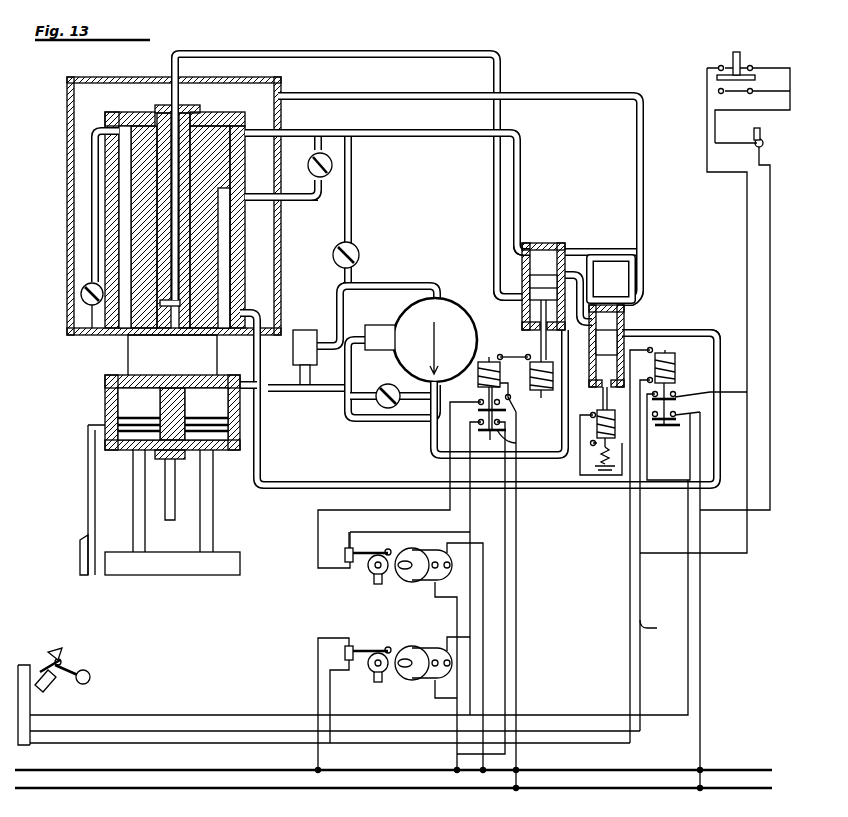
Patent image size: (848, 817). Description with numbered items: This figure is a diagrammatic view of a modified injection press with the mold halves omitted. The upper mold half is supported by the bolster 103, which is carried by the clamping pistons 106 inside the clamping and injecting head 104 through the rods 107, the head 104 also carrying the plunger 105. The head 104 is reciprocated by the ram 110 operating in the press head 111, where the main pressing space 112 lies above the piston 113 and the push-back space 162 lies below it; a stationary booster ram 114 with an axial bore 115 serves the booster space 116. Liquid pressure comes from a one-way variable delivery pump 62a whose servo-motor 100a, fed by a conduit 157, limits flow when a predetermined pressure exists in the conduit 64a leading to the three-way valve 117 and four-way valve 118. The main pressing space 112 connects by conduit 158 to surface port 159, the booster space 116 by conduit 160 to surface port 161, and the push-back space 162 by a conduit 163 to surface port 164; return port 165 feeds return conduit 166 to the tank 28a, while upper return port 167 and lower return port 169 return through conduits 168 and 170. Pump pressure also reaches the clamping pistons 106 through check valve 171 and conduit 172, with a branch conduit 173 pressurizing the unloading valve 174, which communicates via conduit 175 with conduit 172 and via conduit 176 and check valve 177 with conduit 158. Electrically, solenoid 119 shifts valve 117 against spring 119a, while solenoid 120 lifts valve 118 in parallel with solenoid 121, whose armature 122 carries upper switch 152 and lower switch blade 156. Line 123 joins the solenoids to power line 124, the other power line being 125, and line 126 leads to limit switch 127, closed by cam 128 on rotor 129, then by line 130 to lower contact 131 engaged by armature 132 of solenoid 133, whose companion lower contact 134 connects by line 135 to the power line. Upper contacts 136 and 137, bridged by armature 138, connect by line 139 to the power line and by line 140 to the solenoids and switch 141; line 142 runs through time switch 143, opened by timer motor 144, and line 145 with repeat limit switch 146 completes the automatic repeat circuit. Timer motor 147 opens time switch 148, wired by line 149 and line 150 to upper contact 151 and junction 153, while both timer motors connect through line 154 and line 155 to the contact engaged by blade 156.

The tank 28a is at (330, 287).
The one-way variable delivery pump 62a is at (470, 294).
The conduit 64a is at (430, 443).
The servo-motor 100a is at (383, 321).
The bolster 103 is at (183, 568).
The clamping and injecting head 104 is at (105, 386).
The plunger 105 is at (172, 505).
The clamping pistons 106 is at (136, 420).
The rods 107 is at (132, 488).
The ram 110 is at (134, 352).
The press head 111 is at (67, 333).
The main pressing space 112 is at (222, 133).
The piston 113 is at (123, 130).
The booster ram 114 is at (192, 112).
The axial bore 115 is at (158, 138).
The booster space 116 is at (178, 306).
The three-way valve 117 is at (608, 305).
The four-way valve 118 is at (540, 246).
The solenoid 119 is at (597, 410).
The spring 119a is at (617, 460).
The solenoid 120 is at (543, 392).
The solenoid 121 is at (490, 357).
The armature 122 is at (487, 440).
The line 123 is at (516, 685).
The power line 124 is at (406, 791).
The power line 125 is at (738, 769).
The line 126 is at (505, 512).
The limit switch 127 is at (48, 660).
The cam 128 is at (80, 550).
The rotor 129 is at (88, 469).
The line 130 is at (168, 714).
The lower contact 131 is at (712, 408).
The armature 132 is at (665, 438).
The solenoid 133 is at (676, 360).
The lower contact 134 is at (668, 437).
The line 135 is at (656, 630).
The upper contact 136 is at (668, 400).
The upper contact 137 is at (670, 391).
The armature 138 is at (712, 390).
The line 139 is at (701, 595).
The line 140 is at (747, 226).
The switch 141 is at (747, 55).
The line 142 is at (350, 693).
The time switch 143 is at (345, 652).
The timer motor 144 is at (424, 645).
The line 145 is at (771, 262).
The repeat limit switch 146 is at (763, 138).
The timer motor 147 is at (408, 582).
The time switch 148 is at (349, 547).
The line 149 is at (400, 524).
The line 150 is at (318, 511).
The upper contact 151 is at (478, 403).
The upper switch 152 is at (476, 420).
The point of junction 153 is at (518, 412).
The line 154 is at (455, 637).
The line 155 is at (470, 520).
The lower switch blade 156 is at (518, 443).
The conduit 157 is at (364, 420).
The conduit 158 is at (428, 140).
The surface port 159 is at (520, 243).
The conduit 160 is at (367, 52).
The surface port 161 is at (520, 297).
The push-back space 162 is at (232, 243).
The conduit 163 is at (280, 483).
The surface port 164 is at (628, 333).
The return port 165 is at (640, 305).
The return conduit 166 is at (575, 92).
The upper return port 167 is at (560, 248).
The conduit 168 is at (600, 251).
The lower return port 169 is at (547, 330).
The conduit 170 is at (588, 268).
The check valve 171 is at (388, 383).
The conduit 172 is at (322, 396).
The conduit 173 is at (312, 385).
The unloading valve 174 is at (300, 330).
The conduit 175 is at (280, 396).
The conduit 176 is at (338, 323).
The check valve 177 is at (352, 250).